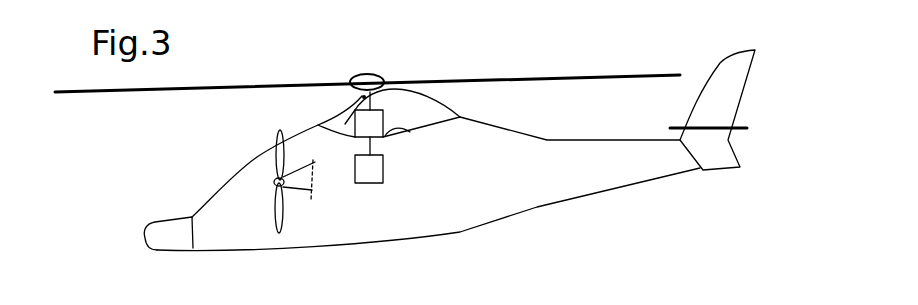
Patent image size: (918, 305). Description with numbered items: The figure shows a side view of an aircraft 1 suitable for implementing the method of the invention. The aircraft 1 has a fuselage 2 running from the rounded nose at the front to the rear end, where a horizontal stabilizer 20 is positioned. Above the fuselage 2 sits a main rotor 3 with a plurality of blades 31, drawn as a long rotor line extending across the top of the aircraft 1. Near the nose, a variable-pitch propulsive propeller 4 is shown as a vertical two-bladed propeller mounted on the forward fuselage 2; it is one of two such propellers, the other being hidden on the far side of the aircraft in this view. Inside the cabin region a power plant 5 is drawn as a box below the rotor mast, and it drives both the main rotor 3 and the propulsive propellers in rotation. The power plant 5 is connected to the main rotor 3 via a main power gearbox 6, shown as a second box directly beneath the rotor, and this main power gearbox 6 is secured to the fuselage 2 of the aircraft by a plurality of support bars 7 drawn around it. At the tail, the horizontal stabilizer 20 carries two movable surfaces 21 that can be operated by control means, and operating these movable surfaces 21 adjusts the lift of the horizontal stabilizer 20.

The aircraft 1 is at (480, 166).
The fuselage 2 is at (278, 250).
The main rotor 3 is at (367, 56).
The blades 31 is at (550, 75).
The variable-pitch propulsive propeller 4 is at (275, 210).
The power plant 5 is at (370, 183).
The main power gearbox 6 is at (386, 117).
The support bars 7 is at (347, 135).
The horizontal stabilizer 20 is at (680, 127).
The movable surface 21 is at (723, 127).